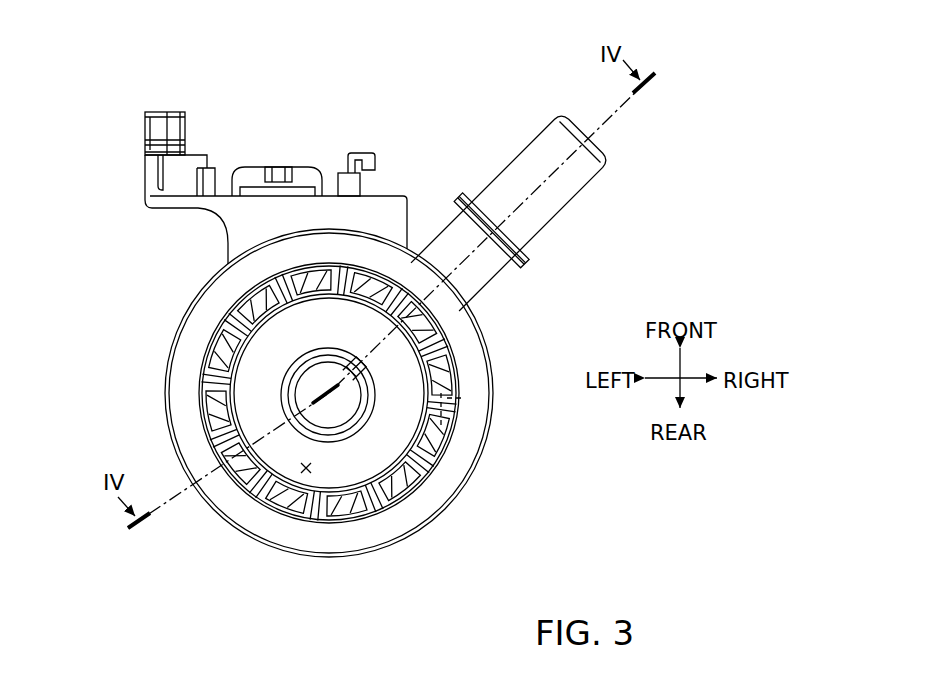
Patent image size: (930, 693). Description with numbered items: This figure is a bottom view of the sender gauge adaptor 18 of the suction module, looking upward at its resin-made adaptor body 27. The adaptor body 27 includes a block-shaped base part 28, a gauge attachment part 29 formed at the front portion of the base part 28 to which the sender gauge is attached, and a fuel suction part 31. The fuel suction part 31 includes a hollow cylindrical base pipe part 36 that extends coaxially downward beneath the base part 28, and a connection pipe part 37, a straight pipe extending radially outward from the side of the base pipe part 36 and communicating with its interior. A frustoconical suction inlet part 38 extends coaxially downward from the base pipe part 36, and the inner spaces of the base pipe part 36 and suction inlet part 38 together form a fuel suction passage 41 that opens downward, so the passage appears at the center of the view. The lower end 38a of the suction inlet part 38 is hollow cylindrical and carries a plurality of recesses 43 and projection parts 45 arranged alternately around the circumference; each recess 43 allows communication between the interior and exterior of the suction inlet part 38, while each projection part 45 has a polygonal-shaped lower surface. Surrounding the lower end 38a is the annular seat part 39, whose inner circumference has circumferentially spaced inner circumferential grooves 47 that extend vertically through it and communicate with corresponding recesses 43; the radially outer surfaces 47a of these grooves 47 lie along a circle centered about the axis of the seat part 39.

The sender gauge adaptor 18 is at (432, 84).
The adaptor body 27 is at (404, 193).
The base part 28 is at (226, 245).
The gauge attachment part 29 is at (142, 180).
The fuel suction part 31 is at (168, 335).
The base pipe part 36 is at (357, 428).
The connection pipe part 37 is at (563, 190).
The suction inlet part 38 is at (400, 380).
The lower end of the suction inlet part 38a is at (443, 400).
The seat part 39 is at (470, 388).
The fuel suction passage 41 is at (306, 476).
The recesses 43 is at (222, 422).
The projection parts 45 is at (215, 388).
The inner circumferential grooves 47 is at (437, 447).
The radially outer surfaces of the inner circumferential grooves 47a is at (287, 277).